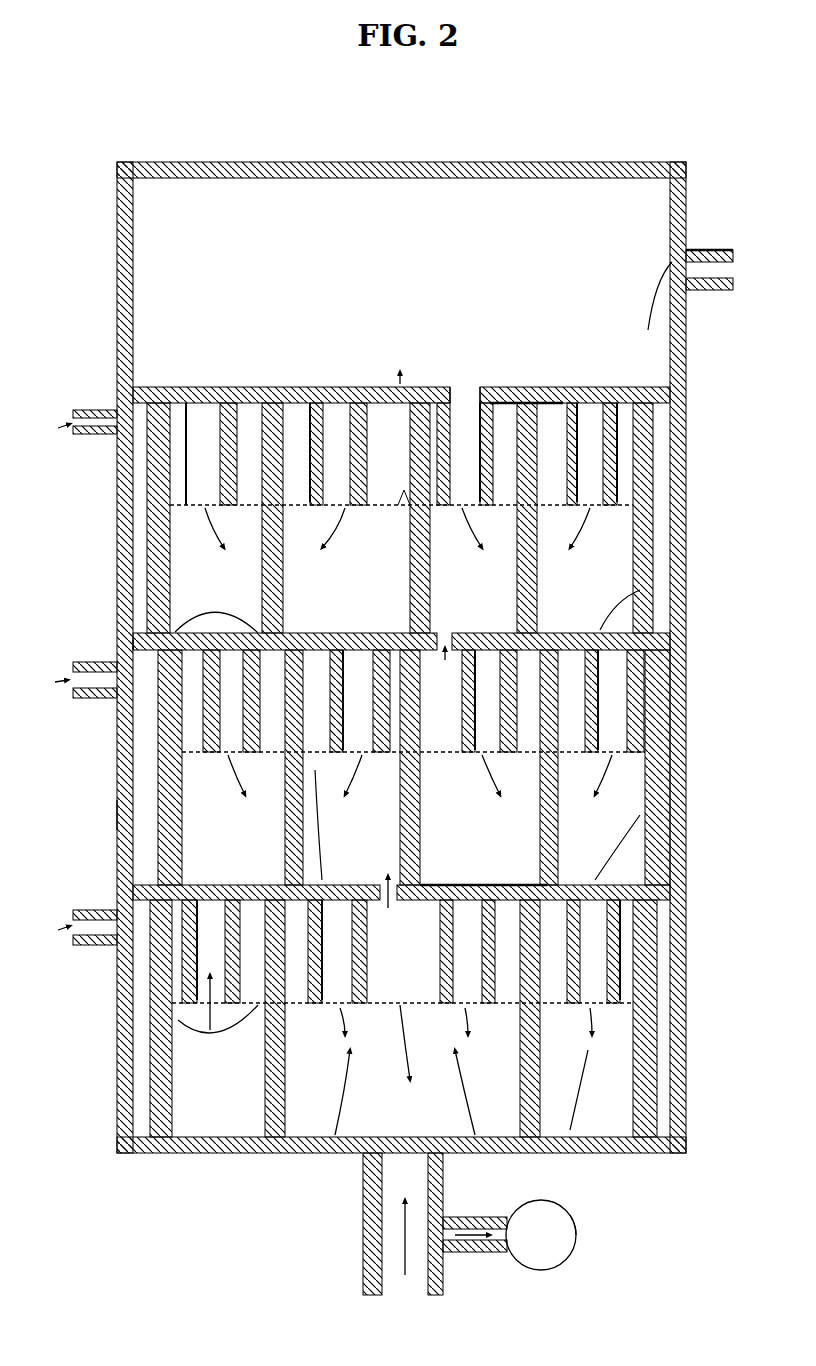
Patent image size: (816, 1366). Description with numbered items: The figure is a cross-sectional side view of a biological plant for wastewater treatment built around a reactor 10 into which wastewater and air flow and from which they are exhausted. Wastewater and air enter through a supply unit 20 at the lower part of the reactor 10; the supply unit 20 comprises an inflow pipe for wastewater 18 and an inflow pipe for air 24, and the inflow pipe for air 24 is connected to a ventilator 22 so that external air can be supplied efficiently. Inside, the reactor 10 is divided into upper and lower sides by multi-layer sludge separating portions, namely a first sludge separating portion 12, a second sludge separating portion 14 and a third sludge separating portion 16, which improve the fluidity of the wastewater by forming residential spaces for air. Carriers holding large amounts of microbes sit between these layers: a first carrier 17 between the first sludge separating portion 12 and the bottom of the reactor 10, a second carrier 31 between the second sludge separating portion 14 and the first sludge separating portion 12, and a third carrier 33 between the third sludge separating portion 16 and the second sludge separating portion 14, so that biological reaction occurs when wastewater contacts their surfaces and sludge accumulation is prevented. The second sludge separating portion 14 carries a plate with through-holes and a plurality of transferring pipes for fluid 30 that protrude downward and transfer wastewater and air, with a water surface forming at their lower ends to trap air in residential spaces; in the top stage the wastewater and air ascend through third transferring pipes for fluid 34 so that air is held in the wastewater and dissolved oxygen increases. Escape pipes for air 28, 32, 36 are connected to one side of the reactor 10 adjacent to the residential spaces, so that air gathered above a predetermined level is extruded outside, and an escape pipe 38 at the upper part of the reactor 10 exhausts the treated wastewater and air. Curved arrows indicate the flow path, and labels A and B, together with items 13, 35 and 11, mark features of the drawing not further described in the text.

The reactor 10 is at (700, 180).
The escape pipe 38 is at (735, 258).
The third sludge separating portion 16 is at (690, 370).
The opening 13 is at (583, 387).
The third transferring pipe for fluid 34 is at (690, 408).
The electrode 35 is at (660, 455).
The third carrier 33 is at (655, 555).
The second sludge separating portion 14 is at (688, 625).
The electrode plates of second stage 11 is at (695, 795).
The transferring pipe for fluid 30 is at (686, 657).
The second carrier 31 is at (690, 693).
The first sludge separating portion 12 is at (690, 882).
The first carrier 17 is at (690, 1060).
The escape pipe for air 36 is at (80, 452).
The escape pipe for air 32 is at (78, 700).
The escape pipe for air 28 is at (85, 948).
The flow direction A is at (112, 822).
The flow direction B is at (123, 646).
The inflow pipe for wastewater 18 is at (360, 1245).
The inflow pipe for air 24 is at (490, 1255).
The supply unit 20 is at (568, 1215).
The ventilator 22 is at (576, 1240).